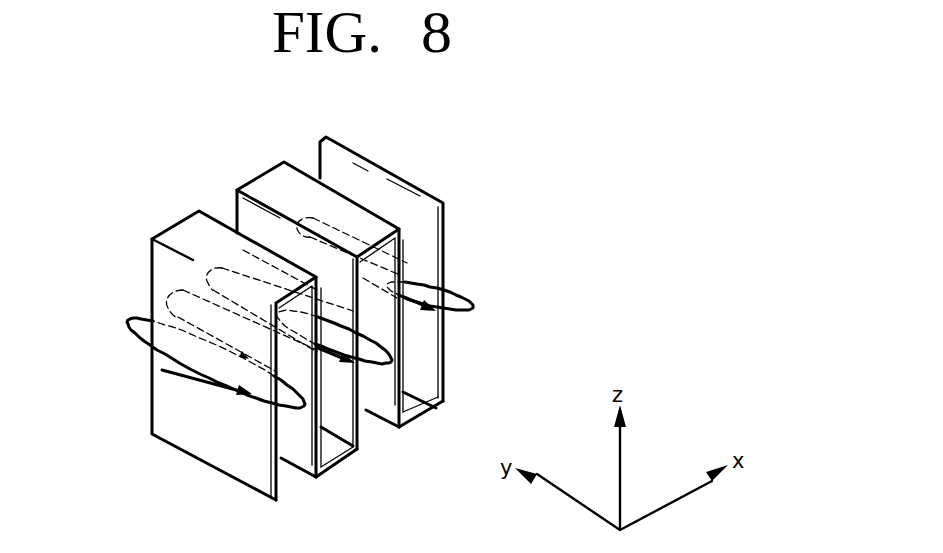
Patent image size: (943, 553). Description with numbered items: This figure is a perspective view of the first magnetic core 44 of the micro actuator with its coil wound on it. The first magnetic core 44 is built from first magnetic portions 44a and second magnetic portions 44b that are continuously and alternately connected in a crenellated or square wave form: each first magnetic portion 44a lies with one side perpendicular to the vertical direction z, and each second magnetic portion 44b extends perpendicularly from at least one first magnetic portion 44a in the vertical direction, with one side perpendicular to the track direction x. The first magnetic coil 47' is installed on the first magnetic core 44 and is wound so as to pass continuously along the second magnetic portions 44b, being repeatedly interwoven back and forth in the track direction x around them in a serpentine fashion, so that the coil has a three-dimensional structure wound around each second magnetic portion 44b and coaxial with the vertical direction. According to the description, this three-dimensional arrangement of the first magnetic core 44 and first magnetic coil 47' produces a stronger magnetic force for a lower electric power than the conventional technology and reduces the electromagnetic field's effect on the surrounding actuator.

The first magnetic core 44 is at (403, 131).
The first magnetic portion 44a is at (192, 225).
The second magnetic portion 44b is at (157, 247).
The first magnetic coil 47' is at (216, 421).